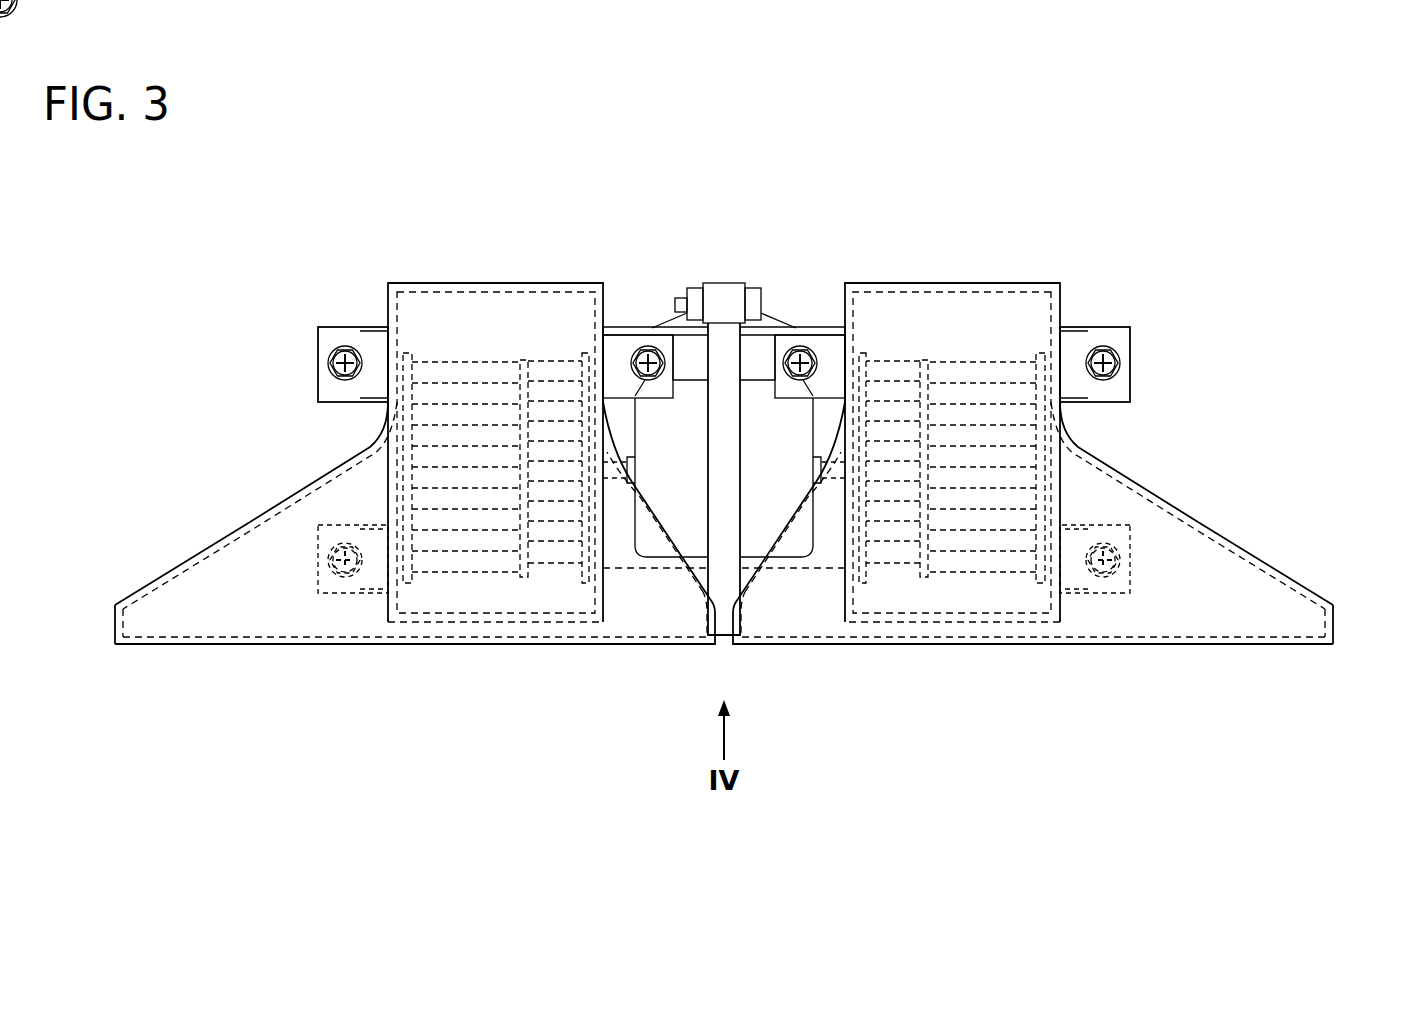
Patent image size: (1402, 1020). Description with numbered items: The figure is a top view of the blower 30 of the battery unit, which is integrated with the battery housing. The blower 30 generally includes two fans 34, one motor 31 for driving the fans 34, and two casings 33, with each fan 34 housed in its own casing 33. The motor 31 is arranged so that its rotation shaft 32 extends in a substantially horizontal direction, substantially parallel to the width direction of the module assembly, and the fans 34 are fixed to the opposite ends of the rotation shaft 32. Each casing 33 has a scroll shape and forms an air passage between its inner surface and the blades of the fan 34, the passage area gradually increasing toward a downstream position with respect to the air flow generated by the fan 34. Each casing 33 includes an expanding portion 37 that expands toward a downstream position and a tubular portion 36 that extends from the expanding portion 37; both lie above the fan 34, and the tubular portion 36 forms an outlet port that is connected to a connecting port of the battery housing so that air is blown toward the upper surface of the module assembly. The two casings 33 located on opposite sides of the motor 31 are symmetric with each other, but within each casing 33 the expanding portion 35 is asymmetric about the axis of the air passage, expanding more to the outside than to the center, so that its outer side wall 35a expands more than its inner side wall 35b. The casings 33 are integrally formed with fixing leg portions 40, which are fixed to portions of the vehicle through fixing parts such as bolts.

The blower 30 is at (1160, 484).
The motor 31 is at (762, 393).
The rotation shaft 32 is at (840, 478).
The casing 33 is at (470, 281).
The fan 34 is at (493, 580).
The expanding portion 35 is at (222, 543).
The outer side wall 35a is at (1290, 571).
The inner side wall 35b is at (785, 522).
The tubular portion 36 is at (114, 632).
The expanding portion 37 is at (588, 645).
The fixing leg portion 40 is at (633, 330).